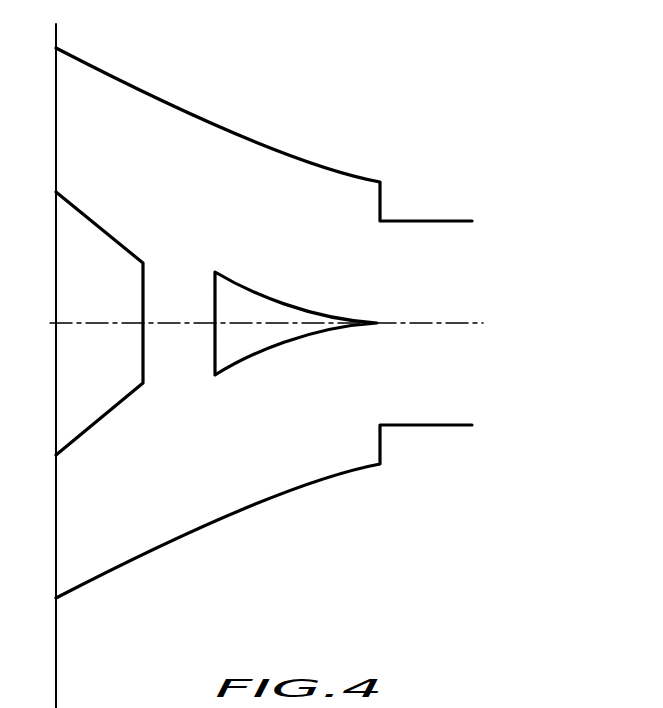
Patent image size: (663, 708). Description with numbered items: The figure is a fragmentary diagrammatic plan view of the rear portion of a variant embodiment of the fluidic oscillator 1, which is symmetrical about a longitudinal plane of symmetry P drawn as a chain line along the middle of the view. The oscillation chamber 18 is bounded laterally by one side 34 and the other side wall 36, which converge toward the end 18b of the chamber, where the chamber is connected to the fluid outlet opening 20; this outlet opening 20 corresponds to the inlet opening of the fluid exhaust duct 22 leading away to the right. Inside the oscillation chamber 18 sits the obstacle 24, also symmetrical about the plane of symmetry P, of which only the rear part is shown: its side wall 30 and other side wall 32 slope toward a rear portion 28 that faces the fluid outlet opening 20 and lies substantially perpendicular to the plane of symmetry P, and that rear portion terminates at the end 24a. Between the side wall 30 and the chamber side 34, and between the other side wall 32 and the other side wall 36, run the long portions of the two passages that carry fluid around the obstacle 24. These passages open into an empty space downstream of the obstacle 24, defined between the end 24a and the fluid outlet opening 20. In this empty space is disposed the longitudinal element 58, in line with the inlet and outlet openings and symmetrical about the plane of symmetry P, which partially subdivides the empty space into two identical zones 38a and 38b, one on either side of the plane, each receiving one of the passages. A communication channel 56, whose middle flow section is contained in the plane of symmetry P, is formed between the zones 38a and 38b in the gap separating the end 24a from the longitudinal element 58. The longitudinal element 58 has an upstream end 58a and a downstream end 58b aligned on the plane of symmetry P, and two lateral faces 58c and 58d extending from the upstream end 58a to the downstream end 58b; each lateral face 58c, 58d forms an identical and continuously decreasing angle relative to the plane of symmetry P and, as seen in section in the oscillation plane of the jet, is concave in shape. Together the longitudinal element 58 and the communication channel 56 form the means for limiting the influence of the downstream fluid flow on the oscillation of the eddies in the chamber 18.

The fluidic oscillator 1 is at (158, 73).
The oscillation chamber 18 is at (248, 142).
The end of the oscillation chamber 18b is at (380, 202).
The fluid outlet opening 20 is at (380, 413).
The fluid exhaust duct 22 is at (450, 425).
The obstacle 24 is at (115, 296).
The end of the rear portion of the obstacle 24a is at (143, 352).
The rear portion of the obstacle 28 is at (137, 262).
The side wall of the obstacle 30 is at (78, 203).
The other side wall of the obstacle 32 is at (88, 432).
The side of the oscillation chamber 34 is at (198, 120).
The other side wall of the oscillation chamber 36 is at (262, 498).
The zone of the empty space 38a is at (287, 222).
The zone of the empty space 38b is at (218, 480).
The communication channel 56 is at (168, 305).
The longitudinal element 58 is at (263, 337).
The upstream end of the longitudinal element 58a is at (215, 295).
The downstream end of the longitudinal element 58b is at (380, 326).
The lateral face of the longitudinal element 58c is at (275, 302).
The lateral face of the longitudinal element 58d is at (297, 337).
The longitudinal plane of symmetry P is at (481, 324).